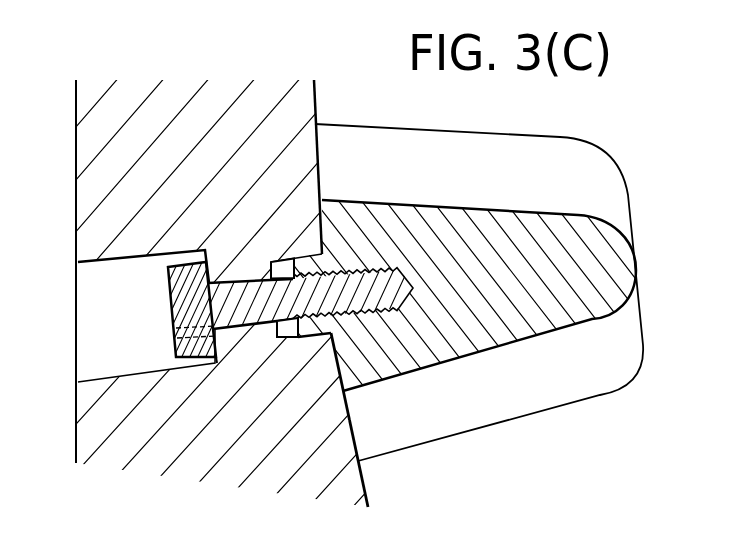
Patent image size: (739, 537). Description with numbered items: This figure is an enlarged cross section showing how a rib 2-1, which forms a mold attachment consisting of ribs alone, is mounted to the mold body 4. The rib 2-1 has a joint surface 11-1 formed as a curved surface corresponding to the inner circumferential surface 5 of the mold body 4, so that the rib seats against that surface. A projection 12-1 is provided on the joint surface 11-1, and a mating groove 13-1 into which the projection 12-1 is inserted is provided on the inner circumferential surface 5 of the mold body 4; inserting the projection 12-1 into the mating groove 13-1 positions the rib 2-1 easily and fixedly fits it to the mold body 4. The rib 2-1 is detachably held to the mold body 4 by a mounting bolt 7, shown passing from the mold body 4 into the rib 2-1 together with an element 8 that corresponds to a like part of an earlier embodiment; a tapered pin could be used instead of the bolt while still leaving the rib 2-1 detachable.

The mold body 4 is at (86, 197).
The rib 2-1 is at (618, 193).
The screw shank 8 is at (233, 279).
The mounting bolt 7 is at (170, 308).
The mating groove 13-1 is at (282, 266).
The projection 12-1 is at (310, 334).
The joint surface 11-1 is at (336, 407).
The inner circumferential surface 5 is at (378, 475).